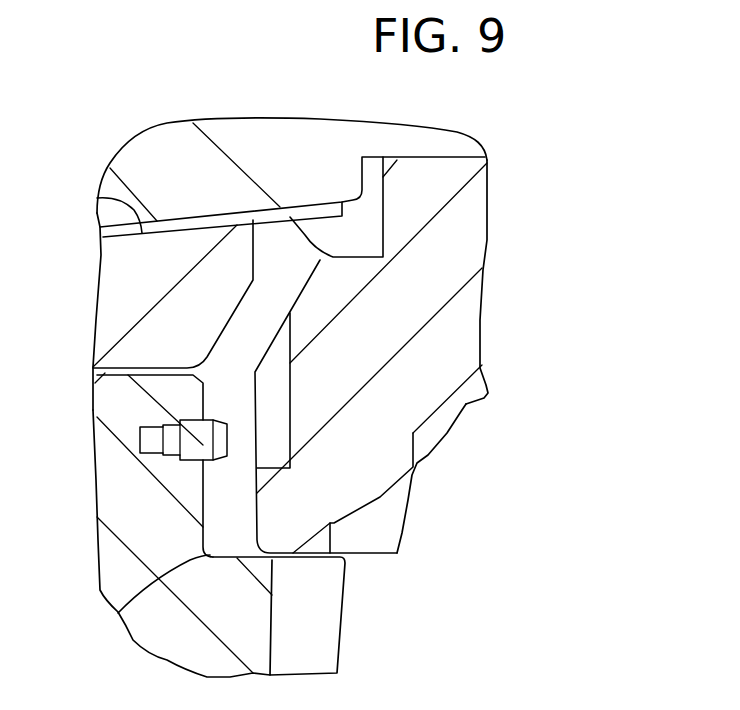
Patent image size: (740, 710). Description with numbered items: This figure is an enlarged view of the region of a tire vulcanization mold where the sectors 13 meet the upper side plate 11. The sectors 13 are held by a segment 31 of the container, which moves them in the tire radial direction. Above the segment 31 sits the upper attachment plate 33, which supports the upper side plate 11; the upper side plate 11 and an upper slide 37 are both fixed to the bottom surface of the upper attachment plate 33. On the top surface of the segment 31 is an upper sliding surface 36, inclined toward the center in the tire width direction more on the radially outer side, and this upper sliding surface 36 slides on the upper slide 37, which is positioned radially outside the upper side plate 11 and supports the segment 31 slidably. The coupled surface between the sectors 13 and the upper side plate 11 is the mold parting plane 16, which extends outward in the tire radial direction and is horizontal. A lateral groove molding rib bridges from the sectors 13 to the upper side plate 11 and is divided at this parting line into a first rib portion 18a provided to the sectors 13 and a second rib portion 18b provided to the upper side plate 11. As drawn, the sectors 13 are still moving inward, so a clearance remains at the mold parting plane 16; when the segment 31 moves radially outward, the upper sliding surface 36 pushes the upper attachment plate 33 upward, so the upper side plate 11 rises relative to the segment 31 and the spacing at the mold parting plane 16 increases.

The upper side plate 11 is at (443, 338).
The sectors 13 is at (133, 503).
The mold parting plane 16 is at (120, 617).
The first rib portion 18a is at (330, 625).
The second rib portion 18b is at (395, 516).
The segment 31 is at (147, 298).
The upper attachment plate 33 is at (138, 163).
The upper sliding surface 36 is at (97, 198).
The upper slide 37 is at (415, 245).